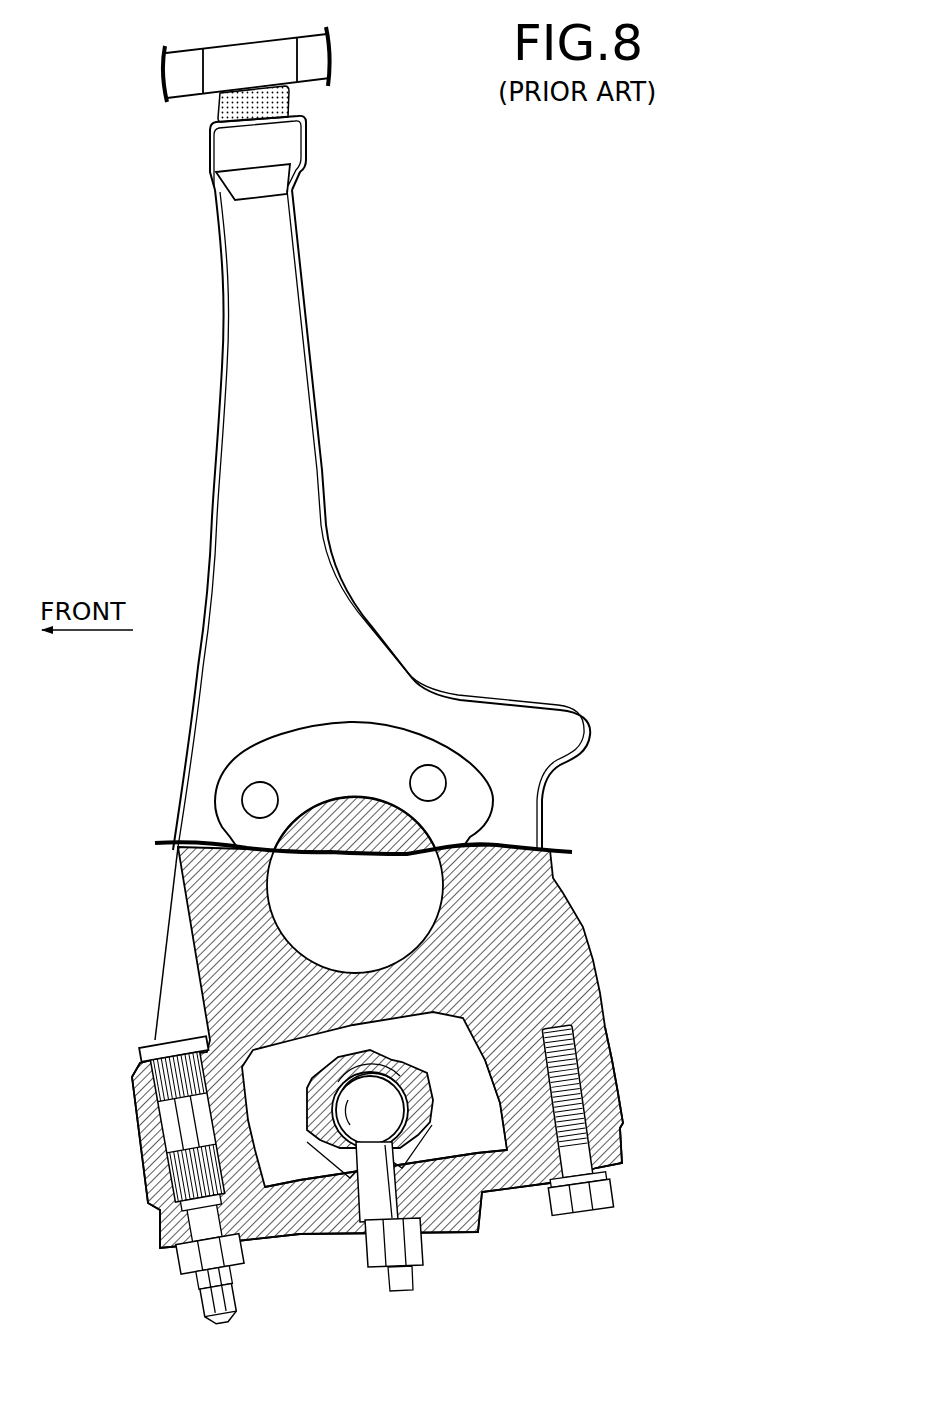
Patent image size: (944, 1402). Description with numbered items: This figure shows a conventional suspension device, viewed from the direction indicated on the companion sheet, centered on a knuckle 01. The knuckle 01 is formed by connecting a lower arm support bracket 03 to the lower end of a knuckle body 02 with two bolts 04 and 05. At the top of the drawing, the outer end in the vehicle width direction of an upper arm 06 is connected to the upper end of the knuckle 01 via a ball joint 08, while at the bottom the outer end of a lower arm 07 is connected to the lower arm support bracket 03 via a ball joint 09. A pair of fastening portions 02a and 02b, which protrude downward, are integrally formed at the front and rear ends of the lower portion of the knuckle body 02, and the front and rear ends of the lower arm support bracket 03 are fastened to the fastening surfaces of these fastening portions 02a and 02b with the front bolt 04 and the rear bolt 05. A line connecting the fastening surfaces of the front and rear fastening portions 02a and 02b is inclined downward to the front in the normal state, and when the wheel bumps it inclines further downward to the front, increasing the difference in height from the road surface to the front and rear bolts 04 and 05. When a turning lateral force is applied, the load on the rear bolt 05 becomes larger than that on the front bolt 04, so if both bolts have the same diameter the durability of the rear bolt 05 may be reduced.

The knuckle 01 is at (374, 480).
The knuckle body 02 is at (205, 580).
The fastening portion 02a is at (150, 1163).
The fastening portion 02b is at (597, 1058).
The lower arm support bracket 03 is at (505, 1175).
The bolt 04 is at (188, 1113).
The bolt 05 is at (585, 1193).
The upper arm 06 is at (193, 76).
The lower arm 07 is at (397, 1056).
The ball joint 08 is at (292, 98).
The ball joint 09 is at (305, 1098).